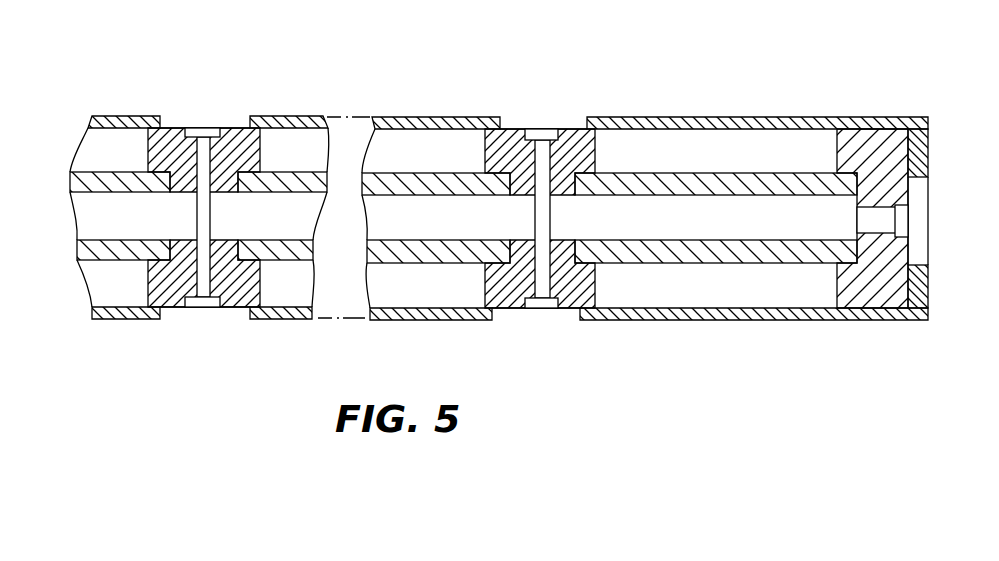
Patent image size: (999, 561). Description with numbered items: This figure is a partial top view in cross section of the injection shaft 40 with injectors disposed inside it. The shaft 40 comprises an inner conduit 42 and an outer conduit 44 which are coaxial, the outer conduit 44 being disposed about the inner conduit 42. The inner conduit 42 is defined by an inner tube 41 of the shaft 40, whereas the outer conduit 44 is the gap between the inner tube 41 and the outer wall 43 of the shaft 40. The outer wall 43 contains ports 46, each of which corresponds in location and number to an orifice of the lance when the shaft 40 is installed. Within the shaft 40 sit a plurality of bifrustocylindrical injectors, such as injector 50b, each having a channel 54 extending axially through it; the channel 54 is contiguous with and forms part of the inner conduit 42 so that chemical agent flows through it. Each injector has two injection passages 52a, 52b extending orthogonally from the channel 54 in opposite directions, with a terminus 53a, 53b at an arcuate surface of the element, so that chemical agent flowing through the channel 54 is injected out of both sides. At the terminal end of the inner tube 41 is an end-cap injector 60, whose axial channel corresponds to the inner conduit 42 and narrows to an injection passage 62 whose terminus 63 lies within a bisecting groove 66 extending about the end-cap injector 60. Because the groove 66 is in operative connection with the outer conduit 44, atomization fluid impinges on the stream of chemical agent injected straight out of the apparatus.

The injection shaft 40 is at (333, 360).
The inner tube 41 is at (711, 177).
The inner conduit 42 is at (730, 235).
The outer wall 43 is at (780, 120).
The outer conduit 44 is at (690, 163).
The port 46 is at (220, 120).
The injector 50b is at (490, 138).
The injection passage 52a is at (203, 175).
The injection passage 52b is at (203, 258).
The terminus 53a is at (193, 128).
The terminus 53b is at (208, 320).
The channel 54 is at (217, 227).
The end-cap injector 60 is at (837, 147).
The injection passage 62 is at (873, 222).
The terminus 63 is at (903, 210).
The bisecting groove 66 is at (903, 225).